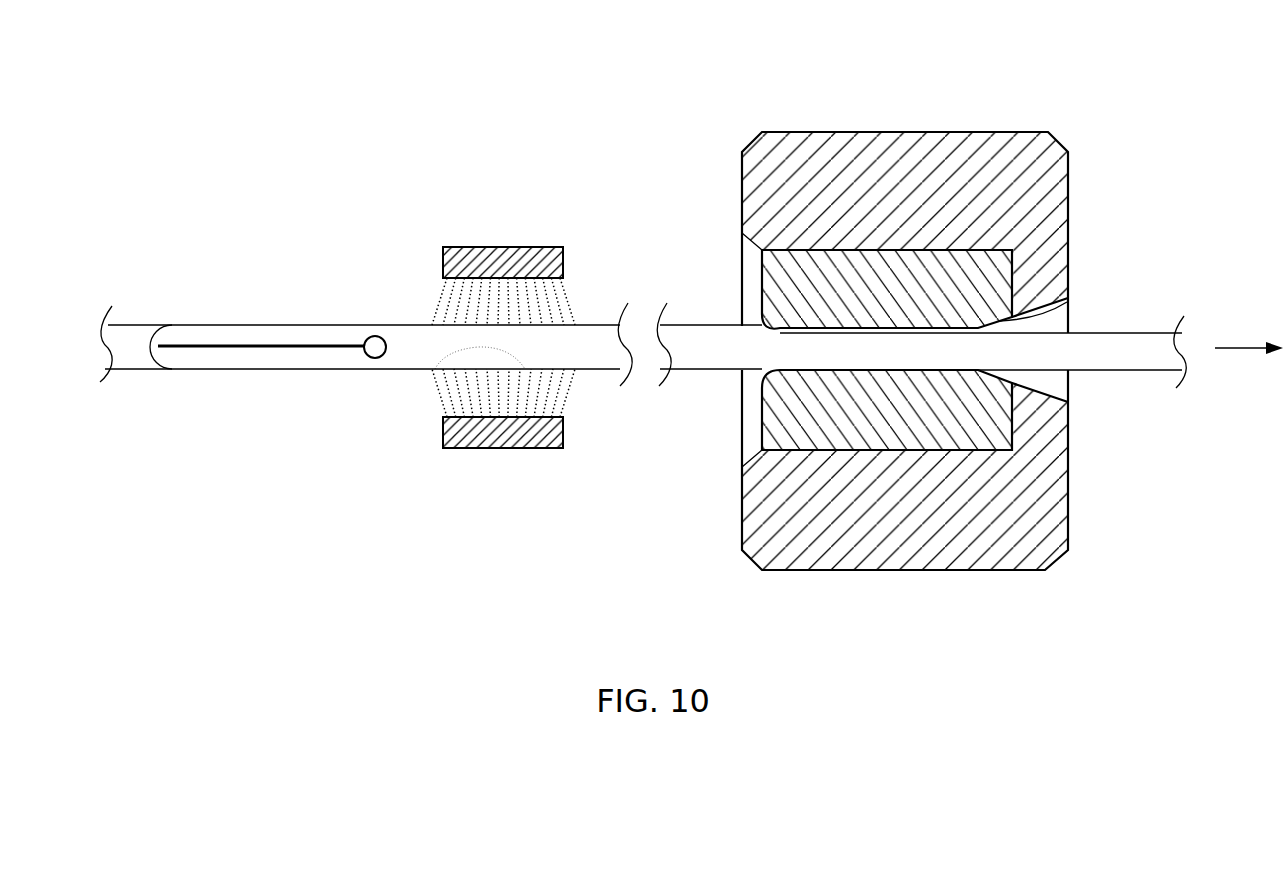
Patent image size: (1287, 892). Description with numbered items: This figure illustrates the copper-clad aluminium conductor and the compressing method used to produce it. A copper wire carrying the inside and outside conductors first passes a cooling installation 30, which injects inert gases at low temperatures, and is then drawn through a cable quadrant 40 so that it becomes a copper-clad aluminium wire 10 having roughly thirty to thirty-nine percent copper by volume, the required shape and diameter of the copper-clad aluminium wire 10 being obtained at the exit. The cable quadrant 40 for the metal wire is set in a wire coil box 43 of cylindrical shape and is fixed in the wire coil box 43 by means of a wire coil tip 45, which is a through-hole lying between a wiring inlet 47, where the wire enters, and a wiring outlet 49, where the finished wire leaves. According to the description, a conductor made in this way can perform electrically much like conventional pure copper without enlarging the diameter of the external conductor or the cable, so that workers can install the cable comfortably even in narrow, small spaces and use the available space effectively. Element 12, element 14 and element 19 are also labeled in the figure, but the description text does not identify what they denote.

The copper-clad aluminium wire 10 is at (1122, 356).
The tube 12 is at (125, 368).
The core wire 14 is at (226, 366).
The core wire tip 19 is at (375, 358).
The cooling installation 30 is at (501, 262).
The cable quadrant 40 is at (911, 293).
The wire coil box 43 is at (905, 150).
The wire coil tip 45 is at (765, 418).
The wiring inlet 47 is at (752, 324).
The wiring outlet 49 is at (1066, 306).